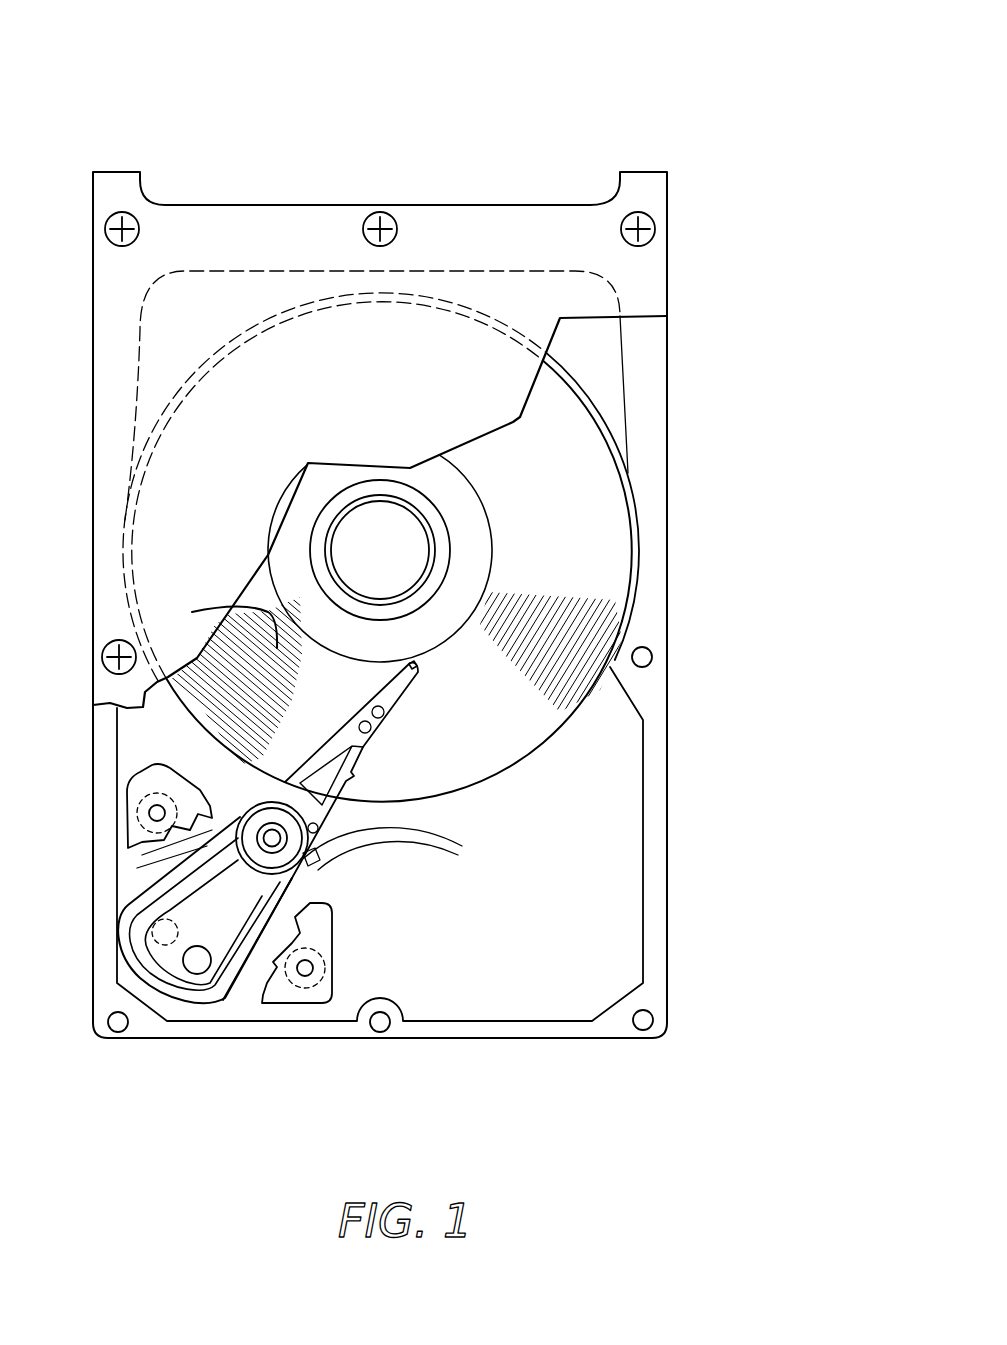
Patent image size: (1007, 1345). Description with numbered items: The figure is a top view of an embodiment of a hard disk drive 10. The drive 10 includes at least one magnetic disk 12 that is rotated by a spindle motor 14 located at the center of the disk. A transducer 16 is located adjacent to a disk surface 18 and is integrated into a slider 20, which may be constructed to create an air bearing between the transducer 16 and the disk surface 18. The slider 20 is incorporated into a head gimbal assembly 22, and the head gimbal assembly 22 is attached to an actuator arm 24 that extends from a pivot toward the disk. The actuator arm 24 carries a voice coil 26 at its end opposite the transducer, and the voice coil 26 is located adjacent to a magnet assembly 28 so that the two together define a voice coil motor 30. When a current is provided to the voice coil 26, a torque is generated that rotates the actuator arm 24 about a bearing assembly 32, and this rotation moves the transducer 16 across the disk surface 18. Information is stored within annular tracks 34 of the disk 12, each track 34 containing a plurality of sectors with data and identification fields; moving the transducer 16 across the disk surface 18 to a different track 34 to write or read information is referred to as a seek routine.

The hard disk drive 10 is at (622, 108).
The magnetic disk 12 is at (570, 445).
The spindle motor 14 is at (380, 548).
The transducer 16 is at (418, 664).
The disk surface 18 is at (411, 547).
The slider 20 is at (418, 674).
The head gimbal assembly 22 is at (376, 753).
The actuator arm 24 is at (183, 868).
The voice coil 26 is at (145, 923).
The magnet assembly 28 is at (142, 867).
The voice coil motor 30 is at (245, 1008).
The bearing assembly 32 is at (276, 848).
The annular tracks 34 is at (214, 680).